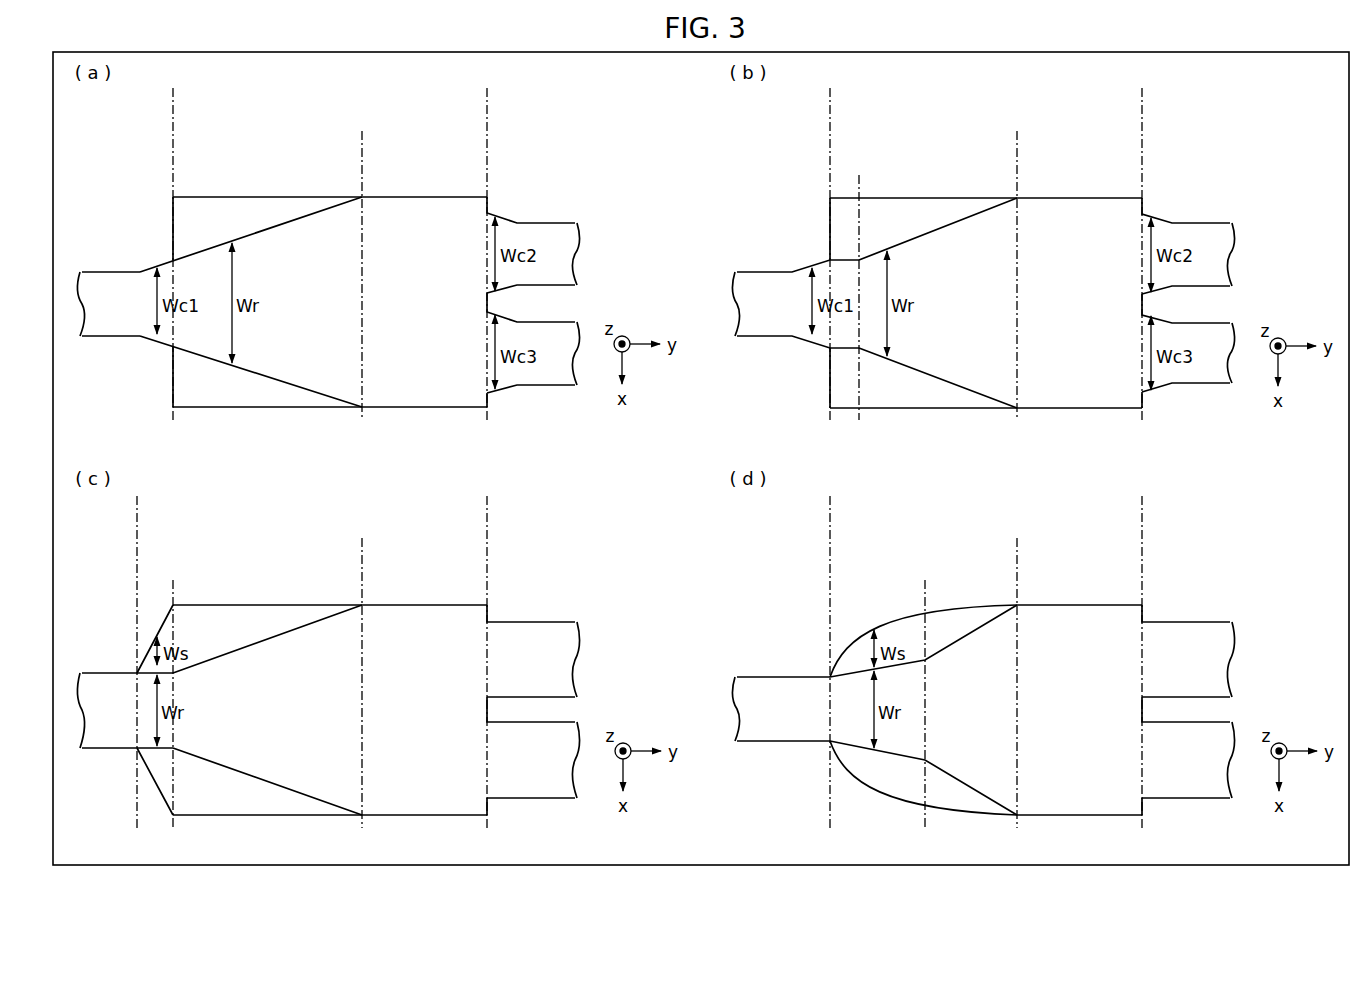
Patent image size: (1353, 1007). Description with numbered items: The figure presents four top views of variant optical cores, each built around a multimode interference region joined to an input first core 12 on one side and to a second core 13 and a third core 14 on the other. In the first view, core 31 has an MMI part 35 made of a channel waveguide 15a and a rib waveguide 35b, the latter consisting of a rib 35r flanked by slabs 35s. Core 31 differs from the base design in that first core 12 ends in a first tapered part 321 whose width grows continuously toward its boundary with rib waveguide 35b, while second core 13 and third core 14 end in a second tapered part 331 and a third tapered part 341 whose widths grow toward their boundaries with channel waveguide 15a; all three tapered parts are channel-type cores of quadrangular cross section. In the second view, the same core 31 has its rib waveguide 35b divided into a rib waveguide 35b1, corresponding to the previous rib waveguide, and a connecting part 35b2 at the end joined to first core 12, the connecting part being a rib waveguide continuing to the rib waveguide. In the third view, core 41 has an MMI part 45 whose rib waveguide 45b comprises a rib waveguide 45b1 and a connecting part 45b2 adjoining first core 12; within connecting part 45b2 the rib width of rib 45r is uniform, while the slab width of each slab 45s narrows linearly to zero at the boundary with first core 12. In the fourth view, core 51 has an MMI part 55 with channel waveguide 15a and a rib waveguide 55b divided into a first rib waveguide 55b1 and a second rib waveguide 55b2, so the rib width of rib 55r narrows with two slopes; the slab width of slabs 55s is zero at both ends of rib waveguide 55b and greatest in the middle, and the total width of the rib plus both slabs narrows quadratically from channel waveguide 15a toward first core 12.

The first core 12 is at (110, 284).
The second core 13 is at (559, 228).
The third core 14 is at (557, 377).
The channel waveguide 15a is at (487, 139).
The core 31 is at (588, 123).
The MMI part 35 is at (173, 96).
The rib waveguide 35b is at (362, 139).
The rib waveguide 35b1 is at (859, 184).
The connecting part 35b2 is at (830, 184).
The slabs 35s is at (242, 393).
The rib 35r is at (287, 325).
The first tapered part 321 is at (144, 318).
The second tapered part 331 is at (509, 228).
The third tapered part 341 is at (510, 377).
The core 41 is at (588, 536).
The MMI part 45 is at (137, 504).
The rib waveguide 45b is at (362, 546).
The rib waveguide 45b1 is at (173, 589).
The connecting part 45b2 is at (137, 589).
The slabs 45s is at (242, 798).
The rib 45r is at (285, 730).
The core 51 is at (1244, 536).
The MMI part 55 is at (830, 504).
The rib waveguide 55b is at (1017, 546).
The first rib waveguide 55b1 is at (925, 589).
The second rib waveguide 55b2 is at (925, 589).
The slabs 55s is at (945, 802).
The rib 55r is at (975, 733).